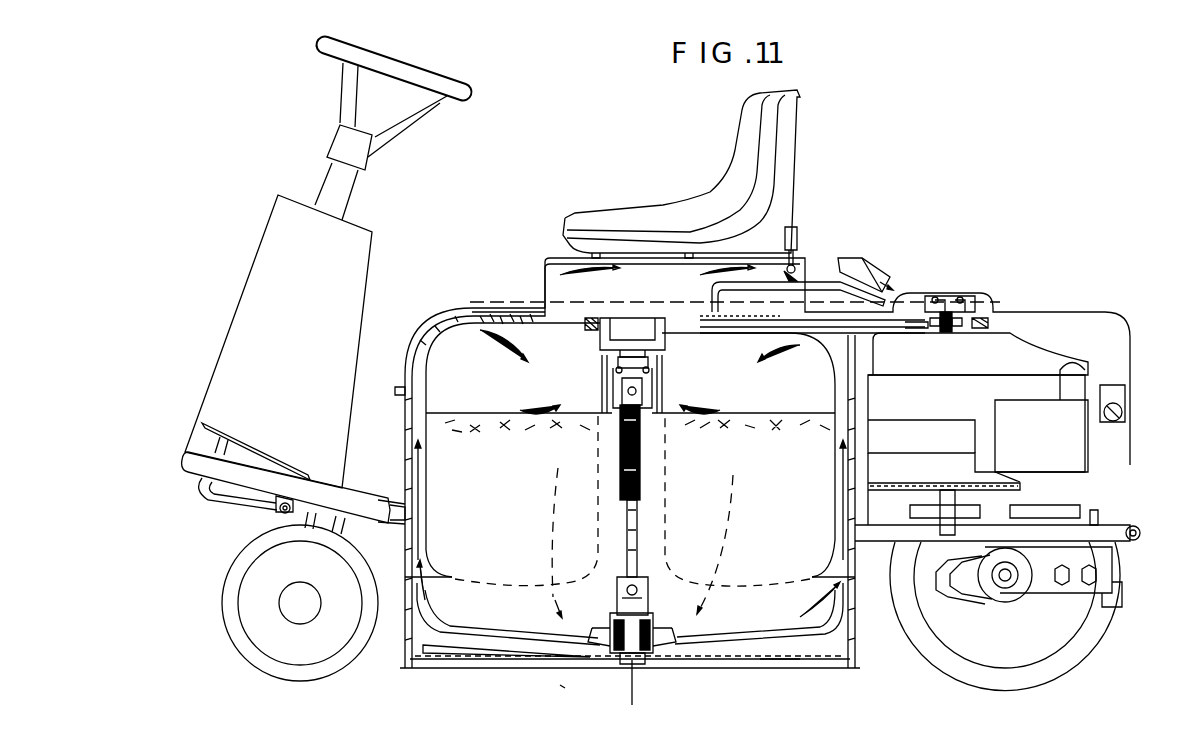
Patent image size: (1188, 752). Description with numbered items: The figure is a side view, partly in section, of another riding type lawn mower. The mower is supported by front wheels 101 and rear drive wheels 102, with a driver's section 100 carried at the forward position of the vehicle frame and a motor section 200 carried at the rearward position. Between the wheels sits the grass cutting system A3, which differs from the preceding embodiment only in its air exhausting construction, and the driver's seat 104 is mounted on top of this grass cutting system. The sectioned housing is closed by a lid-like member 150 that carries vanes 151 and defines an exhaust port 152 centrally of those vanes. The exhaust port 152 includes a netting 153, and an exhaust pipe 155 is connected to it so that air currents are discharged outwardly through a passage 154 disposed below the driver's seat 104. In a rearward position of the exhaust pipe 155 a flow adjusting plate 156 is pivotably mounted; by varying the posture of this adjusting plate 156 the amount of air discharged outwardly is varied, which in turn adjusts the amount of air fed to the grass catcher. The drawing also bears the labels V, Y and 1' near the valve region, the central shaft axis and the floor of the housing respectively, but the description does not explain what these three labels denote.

The driver's section 100 is at (495, 94).
The front wheels 101 is at (320, 678).
The rear drive wheels 102 is at (1090, 636).
The driver's seat 104 is at (790, 142).
The lid-like member 150 is at (505, 308).
The vanes 151 is at (482, 308).
The exhaust port 152 is at (565, 320).
The netting 153 is at (628, 306).
The passage 154 is at (732, 286).
The exhaust pipe 155 is at (855, 266).
The flow adjusting plate 156 is at (800, 275).
The motor section 200 is at (1068, 250).
The valve V is at (890, 328).
The shaft axis Y is at (632, 683).
The grass cutting system A3 is at (555, 691).
The floor plate 1' is at (780, 693).